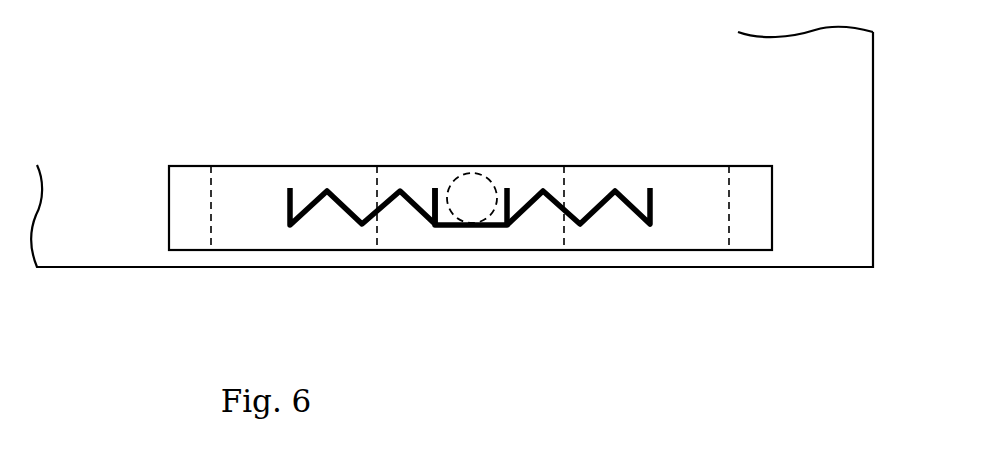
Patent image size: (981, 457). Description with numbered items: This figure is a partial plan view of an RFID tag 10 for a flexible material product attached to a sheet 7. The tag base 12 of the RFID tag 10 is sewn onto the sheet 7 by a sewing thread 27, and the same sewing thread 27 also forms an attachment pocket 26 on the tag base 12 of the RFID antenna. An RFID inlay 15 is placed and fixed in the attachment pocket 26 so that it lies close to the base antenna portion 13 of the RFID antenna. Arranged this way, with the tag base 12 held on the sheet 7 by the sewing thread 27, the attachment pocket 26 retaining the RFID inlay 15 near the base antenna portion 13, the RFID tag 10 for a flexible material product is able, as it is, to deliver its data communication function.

The sheet 7 is at (873, 97).
The RFID tag for a flexible material product 10 is at (516, 122).
The tag base 12 is at (755, 172).
The base antenna portion 13 is at (596, 178).
The RFID inlay 15 is at (454, 172).
The attachment pocket 26 is at (497, 180).
The sewing thread 27 is at (377, 188).